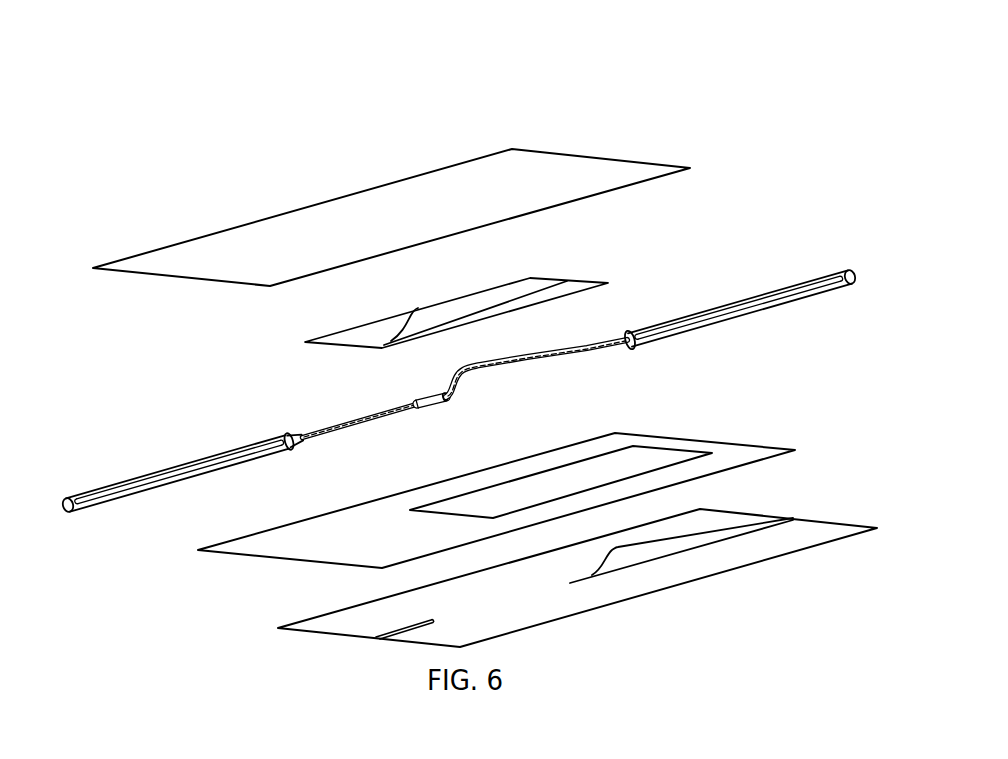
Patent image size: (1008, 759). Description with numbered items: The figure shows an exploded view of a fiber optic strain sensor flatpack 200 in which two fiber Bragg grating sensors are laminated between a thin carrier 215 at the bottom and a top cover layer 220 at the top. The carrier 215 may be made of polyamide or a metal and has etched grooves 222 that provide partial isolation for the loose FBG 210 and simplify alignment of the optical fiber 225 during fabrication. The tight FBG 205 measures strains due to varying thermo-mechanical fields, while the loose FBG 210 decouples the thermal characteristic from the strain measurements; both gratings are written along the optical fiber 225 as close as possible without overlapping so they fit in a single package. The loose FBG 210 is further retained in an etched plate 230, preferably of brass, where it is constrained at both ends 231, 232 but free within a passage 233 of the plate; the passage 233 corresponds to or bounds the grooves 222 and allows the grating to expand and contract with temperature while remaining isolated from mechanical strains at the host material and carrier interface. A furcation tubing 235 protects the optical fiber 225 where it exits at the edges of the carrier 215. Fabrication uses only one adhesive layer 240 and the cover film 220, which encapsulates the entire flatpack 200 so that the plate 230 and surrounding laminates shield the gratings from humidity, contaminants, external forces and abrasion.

The fiber optic strain sensor flatpack 200 is at (602, 108).
The tight FBG sensor 205 is at (337, 430).
The loose FBG sensor 210 is at (520, 358).
The carrier 215 is at (544, 603).
The top cover layer 220 is at (385, 206).
The etched grooves 222 is at (657, 566).
The optical fiber 225 is at (406, 390).
The etched plate 230 is at (605, 266).
The first end of plate 231 is at (594, 351).
The second end of plate 232 is at (434, 396).
The passage 233 is at (465, 296).
The furcation tubing 235 is at (177, 467).
The adhesive layer 240 is at (371, 540).